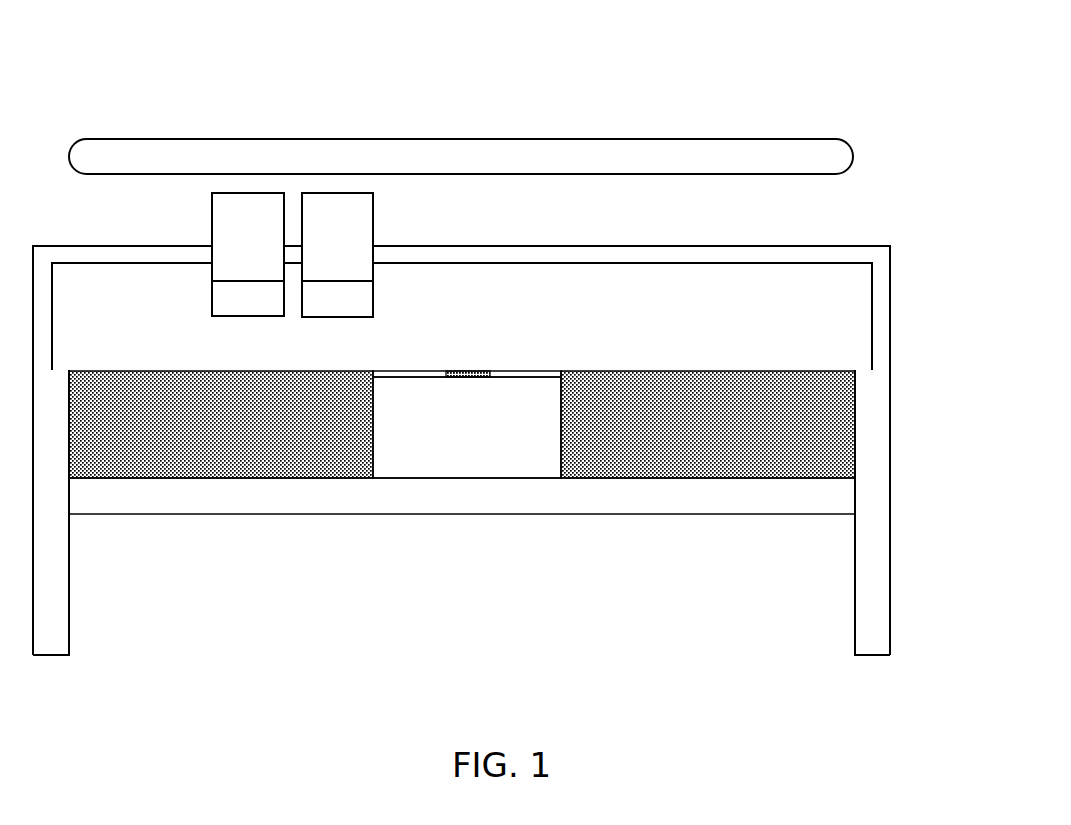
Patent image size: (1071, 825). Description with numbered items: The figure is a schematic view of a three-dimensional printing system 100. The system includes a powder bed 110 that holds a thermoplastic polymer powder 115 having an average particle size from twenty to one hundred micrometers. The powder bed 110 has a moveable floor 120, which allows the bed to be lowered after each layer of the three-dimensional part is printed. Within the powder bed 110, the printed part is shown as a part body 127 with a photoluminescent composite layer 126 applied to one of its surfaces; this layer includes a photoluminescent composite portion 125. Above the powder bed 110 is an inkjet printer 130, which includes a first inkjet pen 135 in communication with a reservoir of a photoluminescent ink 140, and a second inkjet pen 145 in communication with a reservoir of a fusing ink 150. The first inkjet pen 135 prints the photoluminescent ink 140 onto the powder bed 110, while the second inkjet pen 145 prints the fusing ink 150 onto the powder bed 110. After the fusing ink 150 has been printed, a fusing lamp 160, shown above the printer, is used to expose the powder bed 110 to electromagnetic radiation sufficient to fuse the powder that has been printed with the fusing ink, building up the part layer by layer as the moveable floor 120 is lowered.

The 3-dimensional printing system 100 is at (136, 72).
The powder bed 110 is at (760, 553).
The thermoplastic polymer powder 115 is at (705, 388).
The moveable floor 120 is at (588, 495).
The photoluminescent composite portion 125 is at (483, 372).
The photoluminescent composite layer 126 is at (530, 371).
The part body 127 is at (464, 437).
The inkjet printer 130 is at (865, 222).
The first inkjet pen 135 is at (176, 302).
The photoluminescent ink 140 is at (237, 226).
The second inkjet pen 145 is at (405, 294).
The fusing ink 150 is at (348, 218).
The fusing lamp 160 is at (549, 158).